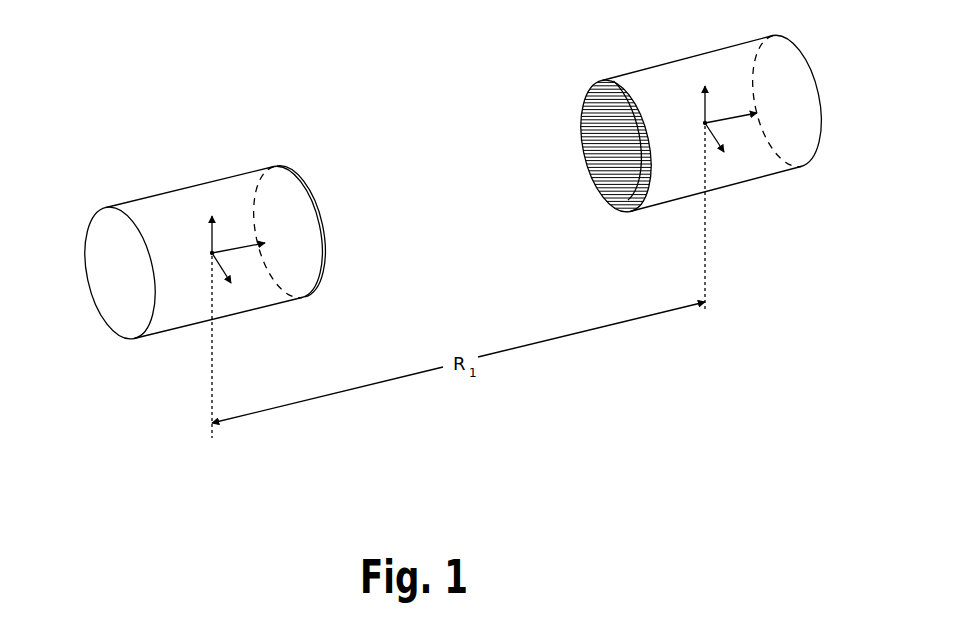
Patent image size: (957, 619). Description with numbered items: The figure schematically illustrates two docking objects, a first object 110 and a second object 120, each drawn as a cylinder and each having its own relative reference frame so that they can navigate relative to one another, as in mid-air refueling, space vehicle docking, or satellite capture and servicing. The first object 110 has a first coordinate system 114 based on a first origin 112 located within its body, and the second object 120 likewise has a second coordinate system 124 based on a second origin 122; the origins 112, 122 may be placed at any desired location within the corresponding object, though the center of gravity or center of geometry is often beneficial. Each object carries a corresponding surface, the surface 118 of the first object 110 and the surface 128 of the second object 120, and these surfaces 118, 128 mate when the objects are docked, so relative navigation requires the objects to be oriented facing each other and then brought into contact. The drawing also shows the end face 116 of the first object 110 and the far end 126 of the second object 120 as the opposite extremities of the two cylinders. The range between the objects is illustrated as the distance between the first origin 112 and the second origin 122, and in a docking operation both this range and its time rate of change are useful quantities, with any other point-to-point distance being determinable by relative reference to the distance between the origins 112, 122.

The first object 110 is at (142, 195).
The first origin 112 is at (206, 257).
The first coordinate system 114 is at (192, 222).
The first element end face 116 is at (98, 260).
The surface 118 is at (320, 232).
The second object 120 is at (632, 70).
The second origin 122 is at (698, 128).
The second coordinate system 124 is at (688, 97).
The second element rear end 126 is at (813, 147).
The surface 128 is at (585, 118).